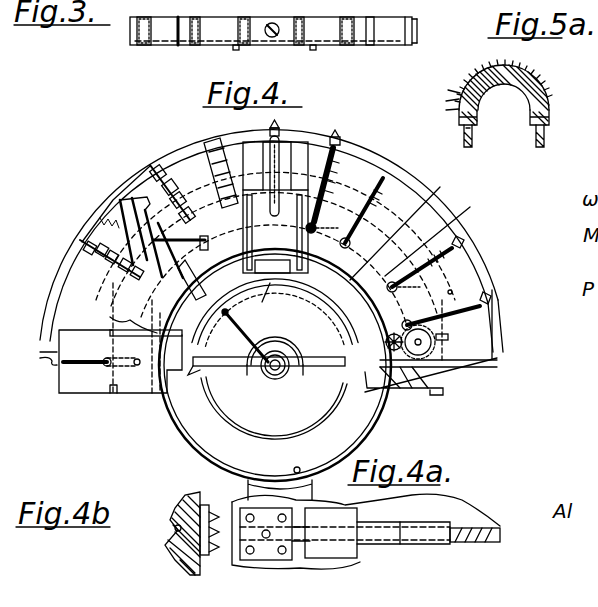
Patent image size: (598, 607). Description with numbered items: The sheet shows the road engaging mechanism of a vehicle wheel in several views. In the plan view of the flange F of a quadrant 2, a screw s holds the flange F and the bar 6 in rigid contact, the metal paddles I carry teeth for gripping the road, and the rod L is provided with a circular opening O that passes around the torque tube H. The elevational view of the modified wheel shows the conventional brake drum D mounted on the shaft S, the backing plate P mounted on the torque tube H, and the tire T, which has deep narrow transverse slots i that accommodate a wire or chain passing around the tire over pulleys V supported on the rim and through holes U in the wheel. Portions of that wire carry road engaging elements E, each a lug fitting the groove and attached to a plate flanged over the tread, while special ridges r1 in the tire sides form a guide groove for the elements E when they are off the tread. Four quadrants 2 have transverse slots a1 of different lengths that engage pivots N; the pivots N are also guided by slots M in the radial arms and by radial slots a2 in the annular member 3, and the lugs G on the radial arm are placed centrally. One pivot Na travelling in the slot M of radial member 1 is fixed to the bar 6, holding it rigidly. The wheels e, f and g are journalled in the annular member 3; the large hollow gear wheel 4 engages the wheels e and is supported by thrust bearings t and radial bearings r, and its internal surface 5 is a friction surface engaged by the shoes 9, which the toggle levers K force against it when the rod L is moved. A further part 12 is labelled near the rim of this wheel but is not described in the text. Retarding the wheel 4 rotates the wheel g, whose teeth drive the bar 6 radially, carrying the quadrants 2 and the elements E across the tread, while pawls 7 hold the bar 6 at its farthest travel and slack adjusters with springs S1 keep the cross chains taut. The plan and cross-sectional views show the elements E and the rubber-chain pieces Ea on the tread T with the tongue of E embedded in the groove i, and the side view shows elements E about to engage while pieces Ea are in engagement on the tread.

In FIG. 3, the circular opening O is at (144, 45).
In FIG. 4, the circular opening O is at (279, 368).
In FIG. 3, the metal paddles I is at (182, 45).
In FIG. 3, the screw s is at (272, 38).
In FIG. 3, the quadrant 2 is at (370, 44).
In FIG. 3, the flange F is at (417, 31).
In FIG. 5A, the rubber chain element Ea is at (507, 66).
In FIG. 4A, the rubber chain element Ea is at (335, 560).
In FIG. 5A, the tire T is at (482, 68).
In FIG. 4, the tire T is at (50, 317).
In FIG. 4A, the tire T is at (405, 522).
In FIG. 5A, the road engaging element E is at (448, 97).
In FIG. 4, the road engaging element E is at (282, 128).
In FIG. 4A, the road engaging element E is at (268, 562).
In FIG. 4B, the road engaging element E is at (206, 560).
In FIG. 4, the ridges r1 is at (212, 143).
In FIG. 4, the radial slot a2 is at (325, 205).
In FIG. 4, the transverse slot a1 is at (127, 203).
In FIG. 4, the spring S1 is at (100, 220).
In FIG. 4, the transverse slot i is at (60, 297).
In FIG. 4A, the transverse slot i is at (466, 542).
In FIG. 4, the radial member 1 is at (41, 352).
In FIG. 4, the slot M is at (70, 362).
In FIG. 4, the pivot Na is at (105, 367).
In FIG. 4, the lug G is at (113, 394).
In FIG. 4, the pivot N is at (137, 366).
In FIG. 4, the bar a is at (143, 335).
In FIG. 4, the pulley V is at (192, 282).
In FIG. 4, the hole U is at (243, 268).
In FIG. 4, the lever K is at (240, 330).
In FIG. 4, the shoe 9 is at (260, 309).
In FIG. 4, the friction surface 5 is at (322, 292).
In FIG. 4, the torque tube H is at (242, 372).
In FIG. 4, the shaft S is at (262, 376).
In FIG. 4, the backing plate P is at (278, 378).
In FIG. 4, the rod L is at (266, 378).
In FIG. 4, the brake drum D is at (337, 413).
In FIG. 4, the thrust bearing t is at (395, 398).
In FIG. 4, the rim 12 is at (453, 183).
In FIG. 4, the annular member 3 is at (480, 205).
In FIG. 4, the large gear wheel 4 is at (483, 297).
In FIG. 4, the radial bearing r is at (439, 312).
In FIG. 4, the wheel g is at (436, 337).
In FIG. 4, the bar 6 is at (435, 370).
In FIG. 4, the wheel f is at (420, 375).
In FIG. 4, the wheel e is at (410, 380).
In FIG. 4, the pawl 7 is at (312, 477).
In FIG. 4, the bracket d is at (312, 488).
In FIG. 4A, the bracket d is at (327, 497).